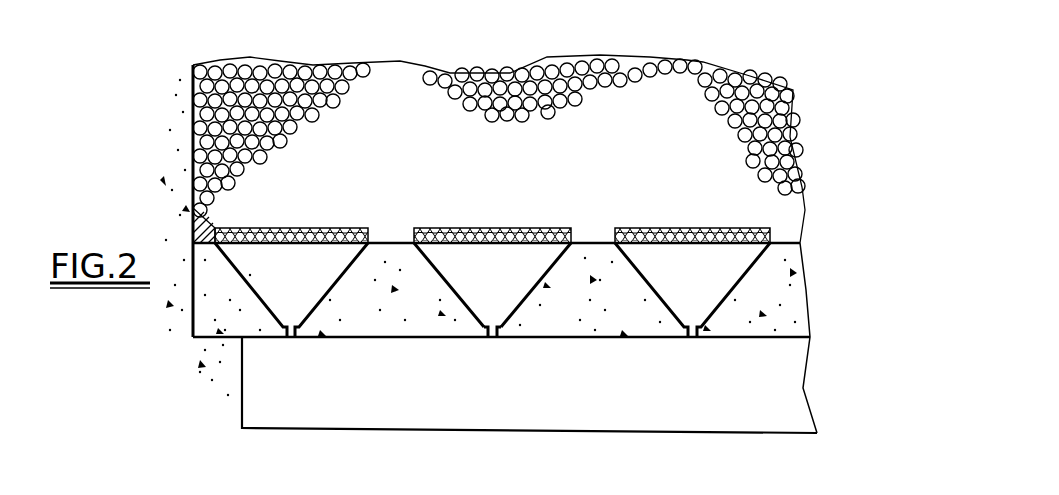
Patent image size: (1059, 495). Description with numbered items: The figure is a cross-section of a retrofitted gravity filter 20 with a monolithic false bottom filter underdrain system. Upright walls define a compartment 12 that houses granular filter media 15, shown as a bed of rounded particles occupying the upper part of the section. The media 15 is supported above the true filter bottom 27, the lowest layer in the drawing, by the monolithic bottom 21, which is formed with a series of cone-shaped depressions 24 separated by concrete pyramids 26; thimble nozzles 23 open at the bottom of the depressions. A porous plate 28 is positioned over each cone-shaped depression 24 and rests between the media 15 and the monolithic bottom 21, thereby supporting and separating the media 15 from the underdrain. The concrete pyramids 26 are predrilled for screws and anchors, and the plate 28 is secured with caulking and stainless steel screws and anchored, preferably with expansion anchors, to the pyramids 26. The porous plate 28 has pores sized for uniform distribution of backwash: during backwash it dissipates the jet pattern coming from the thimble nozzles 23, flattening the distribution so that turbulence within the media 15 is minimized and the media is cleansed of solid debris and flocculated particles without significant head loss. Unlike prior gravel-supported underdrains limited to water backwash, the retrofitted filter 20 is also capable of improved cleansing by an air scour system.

The compartment 12 is at (180, 91).
The filter media 15 is at (230, 150).
The gravity filter 20 is at (806, 69).
The monolithic bottom 21 is at (824, 292).
The thimble nozzles 23 is at (491, 337).
The cone-shaped depressions 24 is at (469, 278).
The concrete pyramids 26 is at (605, 330).
The true filter bottom 27 is at (814, 388).
The porous plate 28 is at (497, 226).